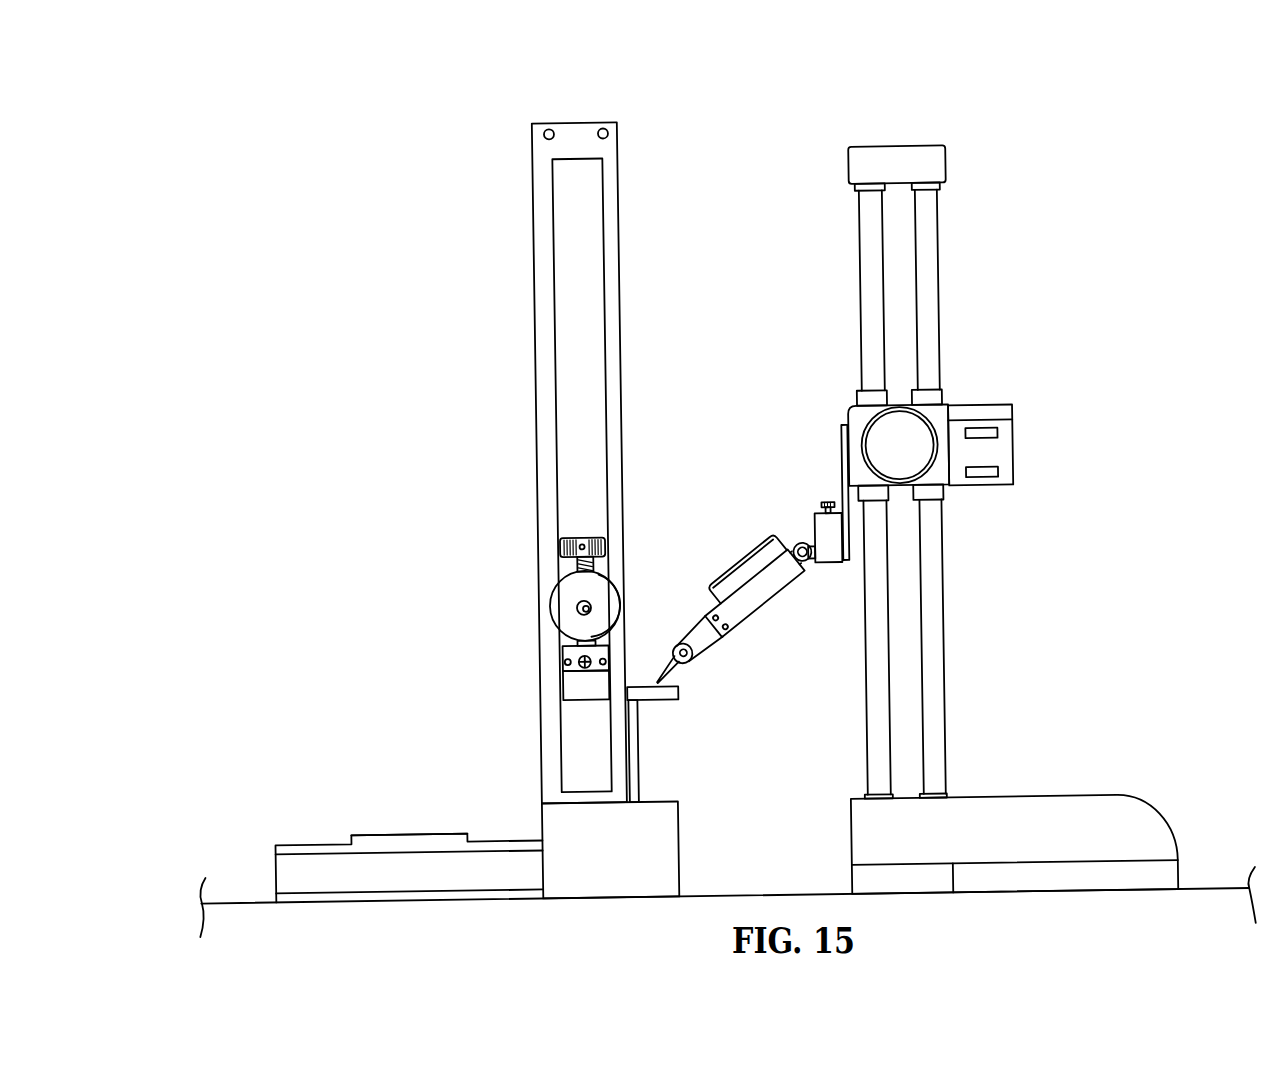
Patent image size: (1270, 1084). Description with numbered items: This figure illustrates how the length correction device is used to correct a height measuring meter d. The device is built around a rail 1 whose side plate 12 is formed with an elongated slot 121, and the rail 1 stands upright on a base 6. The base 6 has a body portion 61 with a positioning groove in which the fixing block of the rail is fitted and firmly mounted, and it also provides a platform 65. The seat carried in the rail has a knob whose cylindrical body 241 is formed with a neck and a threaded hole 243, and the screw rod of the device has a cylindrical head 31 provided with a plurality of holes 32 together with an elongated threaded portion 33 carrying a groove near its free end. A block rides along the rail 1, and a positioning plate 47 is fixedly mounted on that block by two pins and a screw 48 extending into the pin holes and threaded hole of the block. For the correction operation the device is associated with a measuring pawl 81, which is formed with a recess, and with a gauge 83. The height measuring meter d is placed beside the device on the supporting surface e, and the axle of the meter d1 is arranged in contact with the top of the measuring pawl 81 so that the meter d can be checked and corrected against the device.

The rail 1 is at (522, 200).
The side plate 12 is at (550, 308).
The elongated slot 121 is at (574, 382).
The cylindrical head 31 is at (573, 536).
The holes 32 is at (560, 547).
The elongated threaded portion 33 is at (576, 564).
The cylindrical body 241 is at (556, 595).
The threaded hole 243 is at (582, 611).
The positioning plate 47 is at (595, 651).
The screw 48 is at (578, 664).
The gauge 83 is at (572, 761).
The measuring pawl 81 is at (665, 694).
The base 6 is at (306, 800).
The body portion 61 is at (282, 872).
The platform 65 is at (396, 830).
The height measuring meter d is at (988, 345).
The axle of the meter d1 is at (745, 550).
The support surface e is at (815, 905).